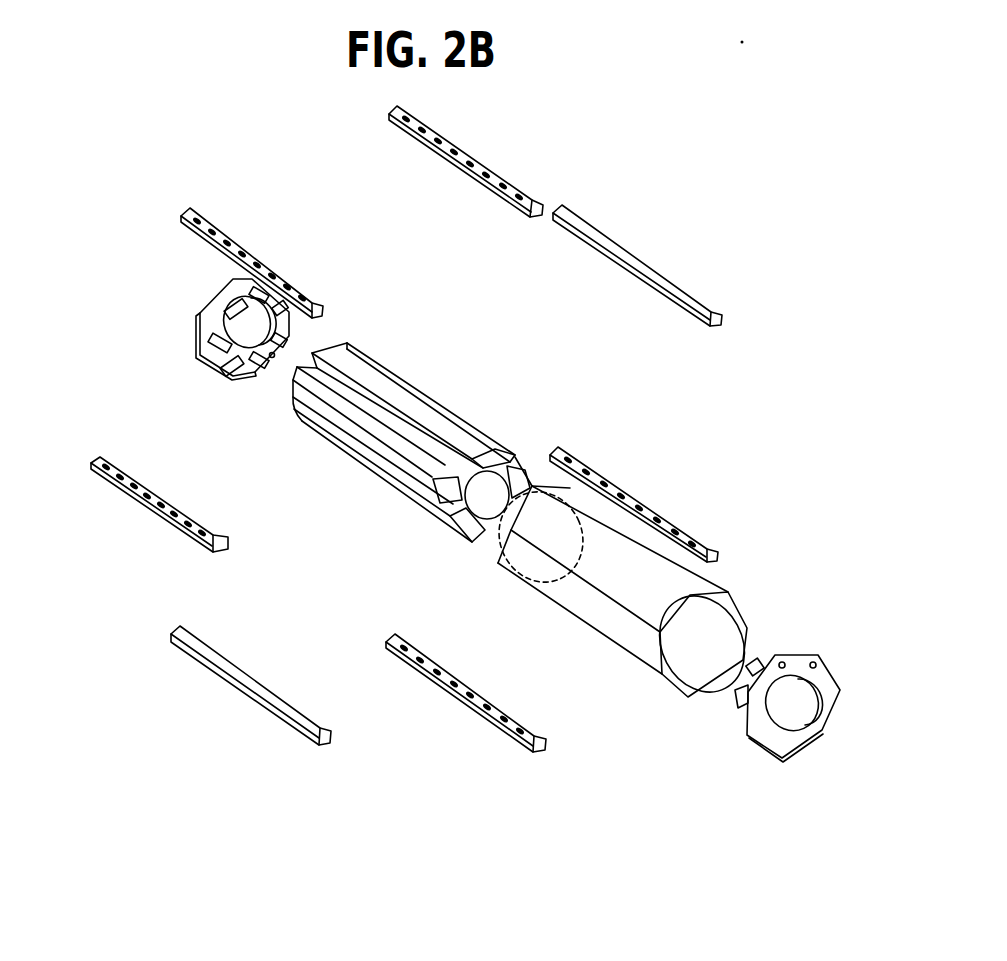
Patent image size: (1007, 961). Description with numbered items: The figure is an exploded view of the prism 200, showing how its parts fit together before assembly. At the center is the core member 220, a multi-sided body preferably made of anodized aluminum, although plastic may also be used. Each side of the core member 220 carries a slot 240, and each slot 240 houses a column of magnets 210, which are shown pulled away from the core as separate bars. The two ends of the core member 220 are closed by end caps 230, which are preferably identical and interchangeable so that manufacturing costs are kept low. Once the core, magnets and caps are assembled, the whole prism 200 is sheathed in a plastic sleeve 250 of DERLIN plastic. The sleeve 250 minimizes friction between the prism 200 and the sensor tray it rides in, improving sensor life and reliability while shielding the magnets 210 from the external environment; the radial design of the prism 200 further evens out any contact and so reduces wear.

The prism 200 is at (405, 751).
The magnets 210 is at (180, 530).
The core member 220 is at (308, 387).
The end caps 230 is at (196, 321).
The slot 240 is at (463, 498).
The plastic sleeve 250 is at (632, 577).